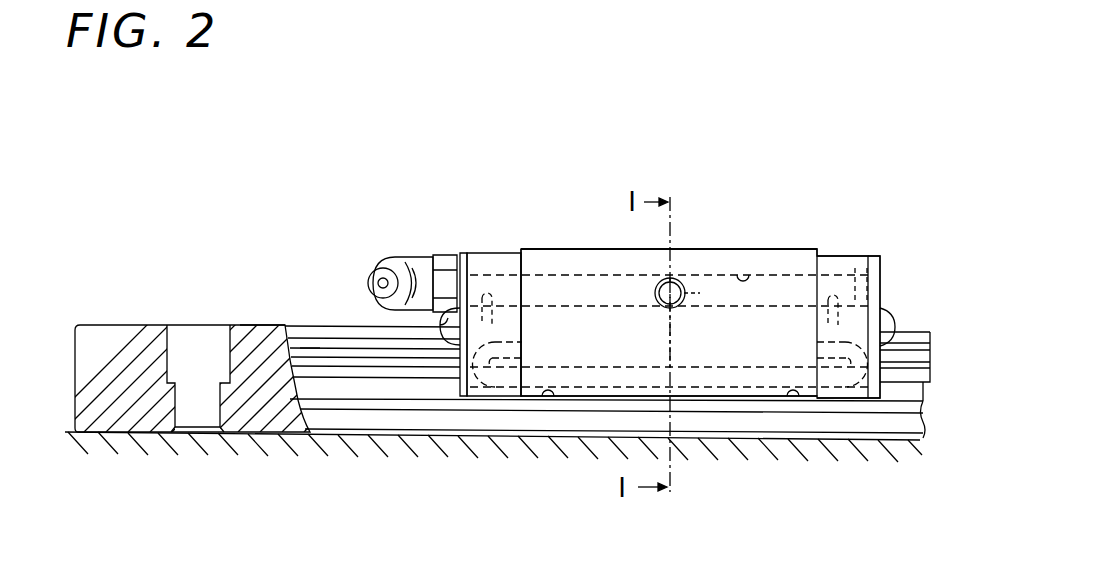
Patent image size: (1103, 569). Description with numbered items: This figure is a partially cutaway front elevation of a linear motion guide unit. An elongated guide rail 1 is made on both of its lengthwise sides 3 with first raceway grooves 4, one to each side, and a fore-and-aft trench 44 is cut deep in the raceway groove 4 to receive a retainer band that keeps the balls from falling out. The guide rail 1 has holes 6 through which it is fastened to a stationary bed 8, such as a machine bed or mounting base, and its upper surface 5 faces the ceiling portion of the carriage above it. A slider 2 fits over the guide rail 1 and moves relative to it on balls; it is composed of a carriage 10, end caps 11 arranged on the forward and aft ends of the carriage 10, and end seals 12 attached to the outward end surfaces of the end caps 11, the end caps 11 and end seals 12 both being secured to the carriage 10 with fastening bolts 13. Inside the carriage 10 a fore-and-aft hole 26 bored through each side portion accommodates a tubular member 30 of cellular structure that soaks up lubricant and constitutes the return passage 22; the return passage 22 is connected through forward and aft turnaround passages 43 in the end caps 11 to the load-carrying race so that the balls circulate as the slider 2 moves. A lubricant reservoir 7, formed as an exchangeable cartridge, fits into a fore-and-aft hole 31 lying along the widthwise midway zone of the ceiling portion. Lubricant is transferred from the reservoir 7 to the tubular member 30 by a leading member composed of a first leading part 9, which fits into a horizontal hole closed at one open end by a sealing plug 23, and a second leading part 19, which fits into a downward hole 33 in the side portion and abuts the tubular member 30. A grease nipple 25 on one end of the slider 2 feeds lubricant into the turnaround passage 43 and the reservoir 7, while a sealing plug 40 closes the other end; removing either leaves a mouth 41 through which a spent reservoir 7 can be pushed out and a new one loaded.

The guide rail 1 is at (147, 320).
The slider 2 is at (796, 248).
The lengthwise sides 3 is at (350, 397).
The first raceway grooves 4 is at (322, 360).
The upper surface 5 is at (256, 325).
The holes 6 is at (172, 357).
The lubricant reservoir 7 is at (577, 292).
The stationary bed 8 is at (180, 487).
The first leading part 9 is at (656, 286).
The carriage 10 is at (600, 262).
The end caps 11 is at (498, 268).
The end seals 12 is at (465, 262).
The fastening bolts 13 is at (447, 333).
The second leading part 19 is at (699, 326).
The return passage 22 is at (796, 397).
The sealing plug 23 is at (683, 280).
The grease nipple 25 is at (424, 266).
The fore-and-aft hole 26 is at (545, 397).
The tubular member 30 is at (758, 397).
The fore-and-aft hole 31 is at (743, 275).
The downward hole 33 is at (672, 330).
The sealing plug 40 is at (866, 268).
The mouth 41 is at (480, 391).
The turnaround passages 43 is at (504, 393).
The fore-and-aft trench 44 is at (310, 348).